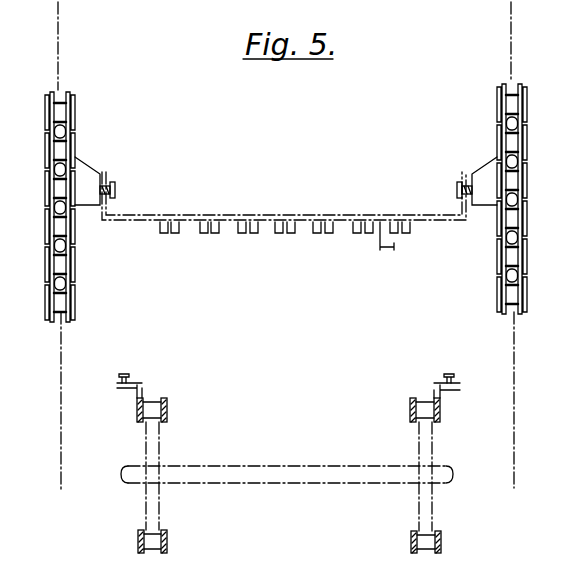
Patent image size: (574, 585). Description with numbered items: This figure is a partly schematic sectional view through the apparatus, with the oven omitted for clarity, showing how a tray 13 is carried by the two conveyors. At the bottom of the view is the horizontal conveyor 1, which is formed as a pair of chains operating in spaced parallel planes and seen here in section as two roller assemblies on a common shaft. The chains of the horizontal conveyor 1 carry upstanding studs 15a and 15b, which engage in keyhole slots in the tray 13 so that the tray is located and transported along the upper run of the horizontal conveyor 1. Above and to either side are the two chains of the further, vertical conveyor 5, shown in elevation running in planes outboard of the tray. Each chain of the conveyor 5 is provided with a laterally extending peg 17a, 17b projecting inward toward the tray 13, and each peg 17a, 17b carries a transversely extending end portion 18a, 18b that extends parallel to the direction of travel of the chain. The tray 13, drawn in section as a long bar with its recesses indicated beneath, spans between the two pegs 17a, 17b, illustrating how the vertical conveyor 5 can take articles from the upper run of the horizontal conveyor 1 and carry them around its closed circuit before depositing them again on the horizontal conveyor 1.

The horizontal conveyor 1 is at (168, 403).
The further conveyor 5 is at (77, 113).
The tray 13 is at (263, 214).
The upstanding stud 15a is at (126, 372).
The upstanding stud 15b is at (448, 371).
The laterally extending peg 17a is at (105, 182).
The laterally extending peg 17b is at (462, 184).
The transversely extending end portion 18a is at (116, 184).
The transversely extending end portion 18b is at (456, 189).